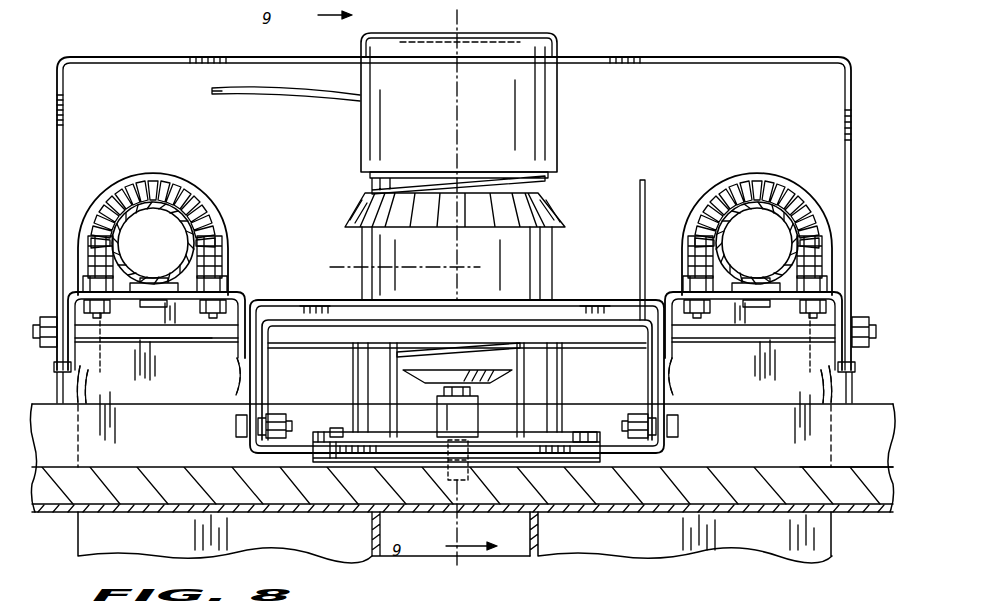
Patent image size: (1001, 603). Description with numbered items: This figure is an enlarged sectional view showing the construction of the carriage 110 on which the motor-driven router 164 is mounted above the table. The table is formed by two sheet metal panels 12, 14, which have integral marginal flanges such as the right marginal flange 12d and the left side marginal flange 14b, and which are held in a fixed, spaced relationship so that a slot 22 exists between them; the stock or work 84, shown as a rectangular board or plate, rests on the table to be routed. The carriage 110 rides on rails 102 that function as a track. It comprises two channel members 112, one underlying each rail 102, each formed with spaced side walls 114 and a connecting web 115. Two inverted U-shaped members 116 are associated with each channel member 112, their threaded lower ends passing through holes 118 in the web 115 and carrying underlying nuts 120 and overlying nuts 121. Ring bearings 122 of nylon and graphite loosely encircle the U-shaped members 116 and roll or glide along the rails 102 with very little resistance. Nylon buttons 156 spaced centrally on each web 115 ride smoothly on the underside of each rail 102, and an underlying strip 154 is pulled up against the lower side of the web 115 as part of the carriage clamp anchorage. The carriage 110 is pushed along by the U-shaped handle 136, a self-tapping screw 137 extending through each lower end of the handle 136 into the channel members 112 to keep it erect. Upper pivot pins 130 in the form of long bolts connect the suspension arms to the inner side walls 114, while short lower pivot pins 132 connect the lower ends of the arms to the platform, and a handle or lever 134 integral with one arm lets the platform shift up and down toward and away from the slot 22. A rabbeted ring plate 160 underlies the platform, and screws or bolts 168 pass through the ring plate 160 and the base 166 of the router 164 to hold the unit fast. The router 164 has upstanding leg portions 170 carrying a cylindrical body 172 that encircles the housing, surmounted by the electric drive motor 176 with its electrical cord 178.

The carriage 110 is at (692, 55).
The U-shaped handle 136 is at (140, 58).
The electrical cord 178 is at (212, 91).
The electric drive motor 176 is at (515, 110).
The motor-driven router 164 is at (574, 149).
The handle or lever 134 is at (648, 190).
The ring bearings 122 is at (170, 180).
The inverted U-shaped members 116 is at (188, 195).
The rails 102 is at (120, 240).
The nylon buttons 156 is at (178, 280).
The underlying strip 154 is at (748, 280).
The overlying nuts 121 is at (88, 285).
The holes 118 is at (228, 278).
The channel members 112 is at (243, 277).
The connecting web 115 is at (140, 325).
The upper pivot pins 130 is at (170, 335).
The underlying nuts 120 is at (195, 318).
The side walls 114 is at (820, 370).
The self-tapping screw 137 is at (56, 368).
The cylindrical body 172 is at (518, 268).
The leg portions 170 is at (505, 352).
The screws or bolts 168 is at (338, 428).
The base 166 is at (585, 432).
The lower pivot pins 132 is at (236, 435).
The rabbeted ring plate 160 is at (355, 466).
The sheet metal panel 12 is at (63, 524).
The sheet metal panel 14 is at (744, 521).
The right marginal flange 12d is at (372, 534).
The slot 22 is at (540, 550).
The left side marginal flange 14b is at (560, 550).
The stock or work 84 is at (864, 508).